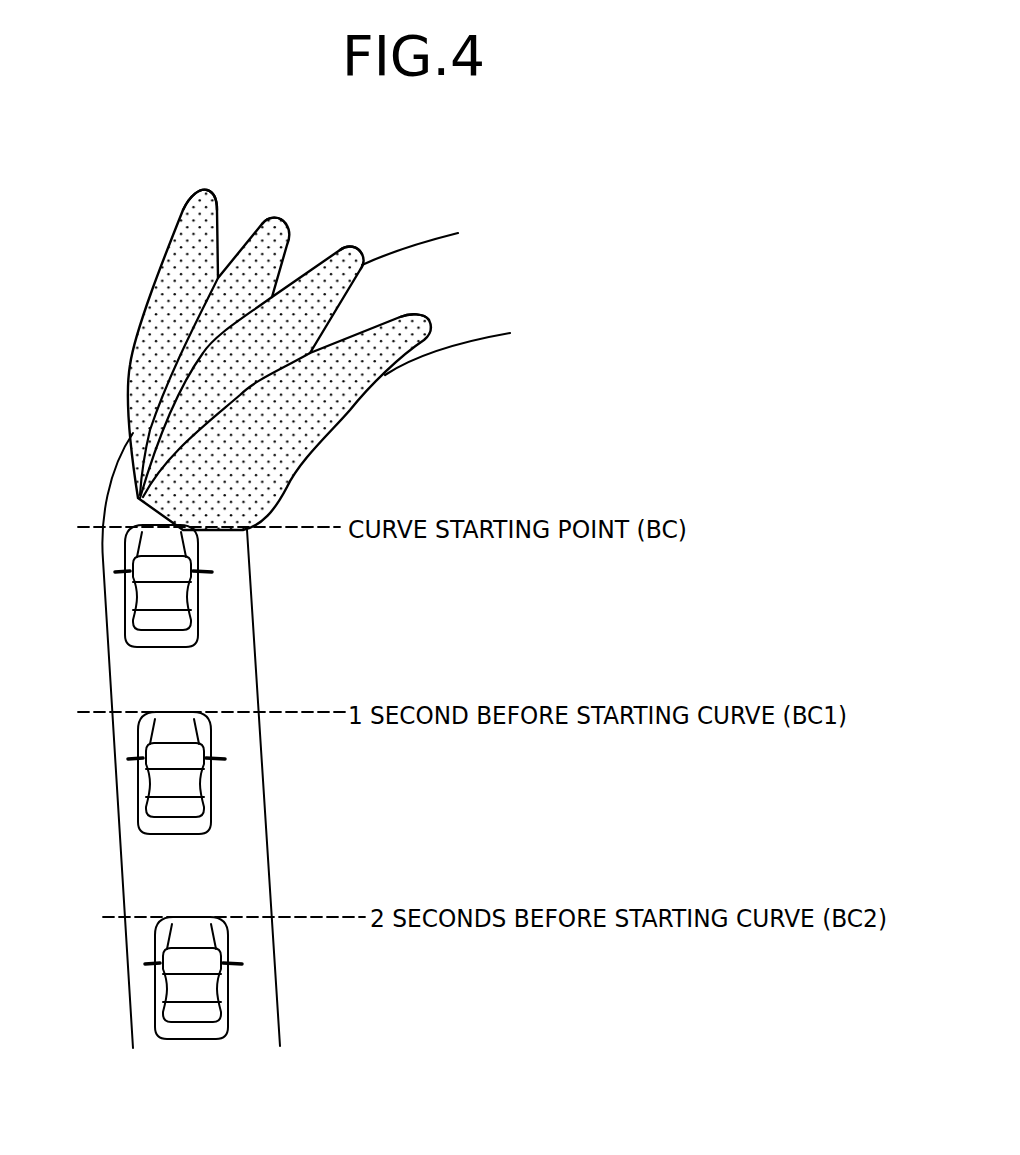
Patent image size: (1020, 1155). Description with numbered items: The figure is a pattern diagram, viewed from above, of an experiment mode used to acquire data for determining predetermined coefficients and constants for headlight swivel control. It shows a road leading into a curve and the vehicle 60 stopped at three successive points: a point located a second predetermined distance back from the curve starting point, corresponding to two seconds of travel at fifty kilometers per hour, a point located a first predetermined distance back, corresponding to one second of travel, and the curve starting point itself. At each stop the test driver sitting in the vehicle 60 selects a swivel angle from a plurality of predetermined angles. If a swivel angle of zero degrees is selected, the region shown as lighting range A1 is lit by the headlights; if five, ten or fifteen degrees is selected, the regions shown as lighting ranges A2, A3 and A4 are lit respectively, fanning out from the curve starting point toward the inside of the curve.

The lighting range A1 is at (207, 192).
The lighting range A2 is at (280, 220).
The lighting range A3 is at (360, 247).
The lighting range A4 is at (425, 315).
The vehicle 60 is at (128, 617).